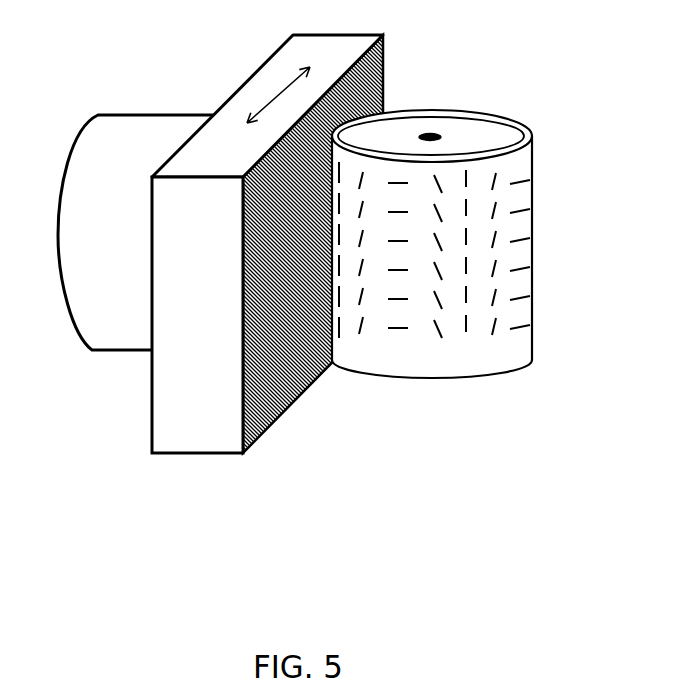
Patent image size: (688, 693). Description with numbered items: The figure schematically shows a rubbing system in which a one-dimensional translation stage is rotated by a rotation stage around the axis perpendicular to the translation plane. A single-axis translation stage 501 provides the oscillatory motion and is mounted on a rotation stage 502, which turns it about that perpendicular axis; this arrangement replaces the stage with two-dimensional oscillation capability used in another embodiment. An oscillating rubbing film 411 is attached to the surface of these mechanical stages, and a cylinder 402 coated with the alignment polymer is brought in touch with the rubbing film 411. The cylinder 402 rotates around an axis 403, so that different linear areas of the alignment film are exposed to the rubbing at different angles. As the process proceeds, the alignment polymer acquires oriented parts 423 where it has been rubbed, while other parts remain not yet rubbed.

The single-axis translation stage 501 is at (238, 120).
The rotation stage 502 is at (112, 313).
The oscillating rubbing film 411 is at (383, 87).
The axis 403 is at (437, 133).
The cylinder 402 is at (507, 137).
The oriented parts 423 is at (430, 342).